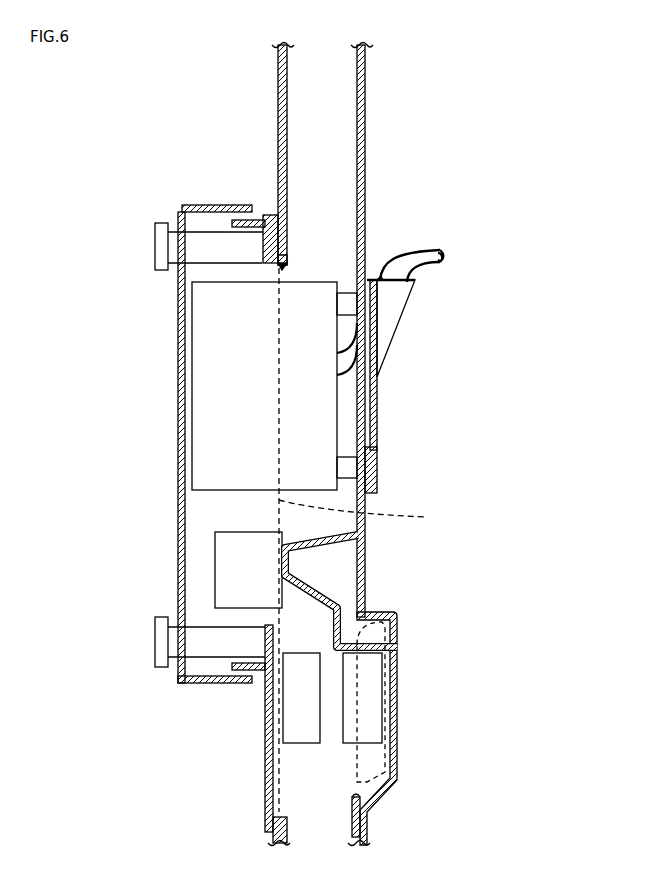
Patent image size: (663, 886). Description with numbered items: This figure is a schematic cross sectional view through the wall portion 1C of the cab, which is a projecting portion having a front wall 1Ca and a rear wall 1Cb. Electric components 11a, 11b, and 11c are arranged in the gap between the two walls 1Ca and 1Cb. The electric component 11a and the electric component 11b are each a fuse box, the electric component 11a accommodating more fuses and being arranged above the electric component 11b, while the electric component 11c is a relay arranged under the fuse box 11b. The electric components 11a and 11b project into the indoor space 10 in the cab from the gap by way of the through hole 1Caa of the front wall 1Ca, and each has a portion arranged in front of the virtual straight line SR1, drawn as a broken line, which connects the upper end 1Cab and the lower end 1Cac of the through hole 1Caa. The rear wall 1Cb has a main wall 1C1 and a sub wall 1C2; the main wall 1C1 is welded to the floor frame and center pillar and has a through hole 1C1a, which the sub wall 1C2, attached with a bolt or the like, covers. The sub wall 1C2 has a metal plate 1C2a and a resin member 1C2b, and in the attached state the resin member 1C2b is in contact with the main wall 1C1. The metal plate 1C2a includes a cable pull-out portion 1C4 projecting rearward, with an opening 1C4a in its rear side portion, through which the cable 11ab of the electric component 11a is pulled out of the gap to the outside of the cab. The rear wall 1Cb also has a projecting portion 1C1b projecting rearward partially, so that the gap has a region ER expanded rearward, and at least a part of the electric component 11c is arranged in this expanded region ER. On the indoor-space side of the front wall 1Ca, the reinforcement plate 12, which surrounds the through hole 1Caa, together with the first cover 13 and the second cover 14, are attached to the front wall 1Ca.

The wall portion 1C is at (422, 568).
The indoor space 10 is at (128, 504).
The second cover 14 is at (178, 323).
The reinforcement plate 12 is at (277, 214).
The first cover 13 is at (267, 243).
The front wall 1Ca is at (278, 101).
The through hole 1Caa is at (280, 266).
The upper end 1Cab is at (285, 266).
The lower end 1Cac is at (266, 812).
The electric component 11a is at (232, 408).
The electric component 11b is at (232, 568).
The electric component 11c is at (350, 724).
The main wall 1C1 is at (367, 163).
The rear wall 1Cb is at (367, 118).
The through hole 1C1a is at (360, 446).
The projecting portion 1C1b is at (398, 690).
The sub wall 1C2 is at (492, 297).
The metal plate 1C2a is at (375, 360).
The resin member 1C2b is at (367, 300).
The cable pull-out portion 1C4 is at (405, 292).
The opening 1C4a is at (381, 280).
The cable 11ab is at (433, 252).
The expanded region ER is at (398, 617).
The virtual straight line SR1 is at (367, 513).